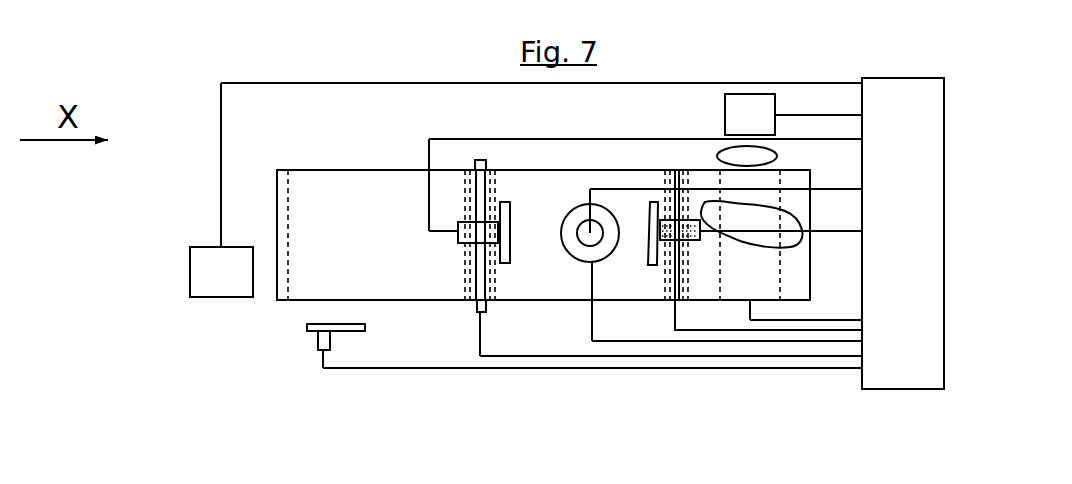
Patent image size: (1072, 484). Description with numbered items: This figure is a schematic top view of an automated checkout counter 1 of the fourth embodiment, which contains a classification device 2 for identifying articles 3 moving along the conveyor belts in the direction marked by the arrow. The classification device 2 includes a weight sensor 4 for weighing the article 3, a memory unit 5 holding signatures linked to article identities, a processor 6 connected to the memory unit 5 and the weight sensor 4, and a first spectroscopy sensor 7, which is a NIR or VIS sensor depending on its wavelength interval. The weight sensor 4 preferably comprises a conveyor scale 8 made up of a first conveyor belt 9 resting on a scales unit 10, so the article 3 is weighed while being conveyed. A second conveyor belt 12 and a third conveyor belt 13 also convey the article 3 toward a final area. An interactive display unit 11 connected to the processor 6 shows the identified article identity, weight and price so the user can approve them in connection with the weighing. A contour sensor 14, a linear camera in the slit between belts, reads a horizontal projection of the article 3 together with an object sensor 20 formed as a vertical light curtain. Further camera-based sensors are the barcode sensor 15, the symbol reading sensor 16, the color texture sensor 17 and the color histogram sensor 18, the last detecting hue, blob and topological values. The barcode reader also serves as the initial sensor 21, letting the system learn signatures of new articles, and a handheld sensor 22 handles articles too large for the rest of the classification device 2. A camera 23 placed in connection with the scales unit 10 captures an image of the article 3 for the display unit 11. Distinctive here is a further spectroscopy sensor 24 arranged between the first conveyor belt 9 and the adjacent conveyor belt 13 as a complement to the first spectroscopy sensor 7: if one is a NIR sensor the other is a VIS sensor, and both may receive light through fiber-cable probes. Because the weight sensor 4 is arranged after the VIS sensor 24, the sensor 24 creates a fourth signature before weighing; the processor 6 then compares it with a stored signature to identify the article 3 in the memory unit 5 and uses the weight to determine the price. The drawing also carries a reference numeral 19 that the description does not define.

The automated checkout counter 1 is at (165, 337).
The classification device 2 is at (763, 265).
The article 3 is at (779, 217).
The weight sensor 4 is at (752, 289).
The memory unit 5 is at (917, 170).
The processor 6 is at (919, 321).
The first spectroscopy sensor 7 is at (686, 305).
The conveyor scale 8 is at (768, 284).
The first conveyor belt 9 is at (806, 290).
The scales unit 10 is at (768, 253).
The interactive display unit 11 is at (793, 114).
The second conveyor belt 12 is at (373, 262).
The third conveyor belt 13 is at (563, 220).
The contour sensor 14 is at (477, 262).
The barcode sensor 15 is at (243, 292).
The symbol reading sensor 16 is at (654, 251).
The color texture sensor 17 is at (594, 268).
The color histogram sensor 18 is at (510, 265).
The guide rails 19 is at (484, 277).
The object sensor 20 is at (482, 314).
The initial sensor 21 is at (188, 272).
The handheld sensor 22 is at (312, 347).
The camera 23 is at (778, 160).
The further spectroscopy sensor 24 is at (683, 267).